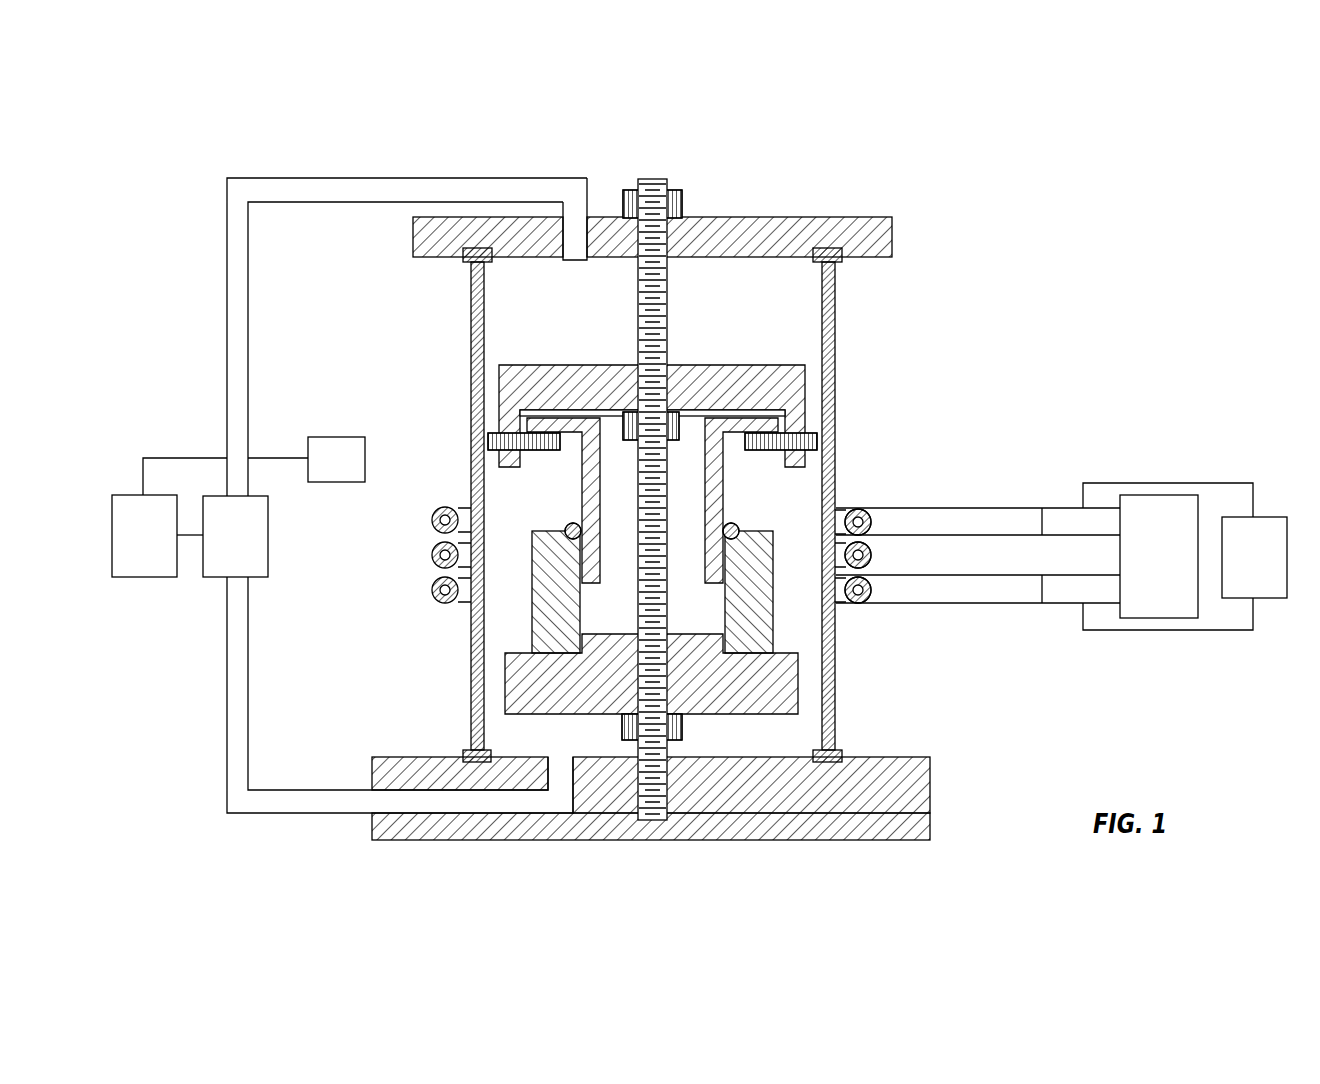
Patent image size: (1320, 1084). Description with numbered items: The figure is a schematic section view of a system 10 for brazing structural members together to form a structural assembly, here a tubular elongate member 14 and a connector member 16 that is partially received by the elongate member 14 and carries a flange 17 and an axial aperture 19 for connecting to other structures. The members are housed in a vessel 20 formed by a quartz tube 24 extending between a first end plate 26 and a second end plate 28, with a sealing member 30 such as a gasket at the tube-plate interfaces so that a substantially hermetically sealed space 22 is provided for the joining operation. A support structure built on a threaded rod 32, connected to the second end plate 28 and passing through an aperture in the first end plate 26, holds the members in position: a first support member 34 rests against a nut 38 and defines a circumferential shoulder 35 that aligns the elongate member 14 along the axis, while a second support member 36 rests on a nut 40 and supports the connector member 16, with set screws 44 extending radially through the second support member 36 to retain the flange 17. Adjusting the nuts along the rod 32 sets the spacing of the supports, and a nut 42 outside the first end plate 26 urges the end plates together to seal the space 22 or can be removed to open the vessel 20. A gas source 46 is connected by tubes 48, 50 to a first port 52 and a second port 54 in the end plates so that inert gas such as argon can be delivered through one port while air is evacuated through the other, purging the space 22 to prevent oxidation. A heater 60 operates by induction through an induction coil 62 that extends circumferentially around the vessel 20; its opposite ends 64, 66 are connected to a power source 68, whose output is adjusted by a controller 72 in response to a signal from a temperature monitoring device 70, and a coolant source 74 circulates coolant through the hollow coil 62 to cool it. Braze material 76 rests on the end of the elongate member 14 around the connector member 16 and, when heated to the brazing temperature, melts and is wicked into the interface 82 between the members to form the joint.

The system 10 is at (1028, 124).
The elongate member 14 is at (532, 617).
The connector member 16 is at (725, 487).
The flange 17 is at (500, 410).
The aperture 19 is at (633, 388).
The vessel 20 is at (864, 714).
The sealed space 22 is at (772, 317).
The quartz tube 24 is at (837, 640).
The first end plate 26 is at (762, 218).
The second end plate 28 is at (897, 840).
The sealing member 30 is at (465, 262).
The threaded rod 32 is at (647, 322).
The first support member 34 is at (743, 703).
The circumferential shoulder 35 is at (838, 655).
The second support member 36 is at (807, 380).
The nut 38 is at (680, 733).
The nut 40 is at (783, 409).
The nut 42 is at (680, 200).
The set screws 44 is at (482, 438).
The gas source 46 is at (248, 551).
The tube 48 is at (260, 176).
The tube 50 is at (225, 815).
The first port 52 is at (586, 272).
The second port 54 is at (560, 748).
The heater 60 is at (1046, 490).
The induction coil 62 is at (411, 554).
The coil end 64 is at (983, 508).
The coil end 66 is at (1027, 603).
The power source 68 is at (1267, 571).
The temperature monitoring device 70 is at (348, 473).
The controller 72 is at (157, 551).
The coolant source 74 is at (1172, 570).
The braze material 76 is at (573, 522).
The interface 82 is at (588, 592).